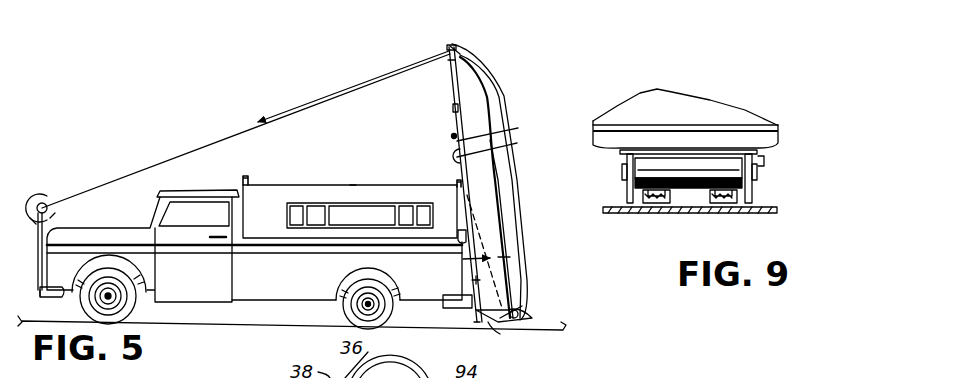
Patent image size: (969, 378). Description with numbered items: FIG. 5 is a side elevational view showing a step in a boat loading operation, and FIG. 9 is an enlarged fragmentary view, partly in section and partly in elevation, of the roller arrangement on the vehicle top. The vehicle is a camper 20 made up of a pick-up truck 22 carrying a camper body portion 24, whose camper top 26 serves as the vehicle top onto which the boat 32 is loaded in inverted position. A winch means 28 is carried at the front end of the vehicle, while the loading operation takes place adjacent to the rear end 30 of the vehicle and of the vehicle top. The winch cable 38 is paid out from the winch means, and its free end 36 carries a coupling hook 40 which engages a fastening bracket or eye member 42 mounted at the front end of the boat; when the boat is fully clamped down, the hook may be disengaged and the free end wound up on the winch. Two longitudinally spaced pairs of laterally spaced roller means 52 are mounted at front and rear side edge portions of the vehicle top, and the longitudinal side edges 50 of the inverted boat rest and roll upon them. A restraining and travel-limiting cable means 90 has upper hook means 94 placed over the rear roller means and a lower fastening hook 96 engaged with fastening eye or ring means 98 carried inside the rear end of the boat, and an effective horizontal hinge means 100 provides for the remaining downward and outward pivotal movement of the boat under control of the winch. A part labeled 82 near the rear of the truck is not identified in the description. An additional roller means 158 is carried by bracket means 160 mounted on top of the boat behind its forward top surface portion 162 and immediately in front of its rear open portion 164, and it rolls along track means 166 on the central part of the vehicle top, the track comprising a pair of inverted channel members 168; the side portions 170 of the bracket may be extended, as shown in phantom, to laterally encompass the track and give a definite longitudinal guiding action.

In FIG. 5, the camper 20 is at (185, 182).
In FIG. 5, the pick-up truck 22 is at (256, 232).
In FIG. 5, the camper body portion 24 is at (272, 206).
In FIG. 5, the camper top 26 is at (349, 184).
In FIG. 5, the winch means 28 is at (50, 196).
In FIG. 5, the rear end 30 is at (468, 281).
In FIG. 5, the boat 32 is at (511, 110).
In FIG. 9, the boat 32 is at (683, 87).
In FIG. 5, the free end of winch cable 36 is at (428, 64).
In FIG. 5, the winch cable 38 is at (410, 72).
In FIG. 5, the coupling hook 40 is at (447, 72).
In FIG. 5, the fastening bracket or eye member 42 is at (453, 44).
In FIG. 5, the longitudinal side edges 50 is at (485, 137).
In FIG. 5, the roller means 52 is at (247, 178).
In FIG. 5, the hitch 82 is at (444, 308).
In FIG. 5, the restraining and travel-limiting cable means 90 is at (512, 257).
In FIG. 5, the upper hook means 94 is at (480, 152).
In FIG. 5, the lower fastening hook 96 is at (520, 310).
In FIG. 5, the fastening eye or ring means 98 is at (494, 338).
In FIG. 5, the effective horizontal hinge means 100 is at (462, 0).
In FIG. 5, the additional roller means 158 is at (449, 135).
In FIG. 9, the additional roller means 158 is at (704, 169).
In FIG. 9, the bracket means 160 is at (766, 160).
In FIG. 5, the forward top surface portion 162 is at (449, 107).
In FIG. 5, the rear open portion 164 is at (475, 234).
In FIG. 9, the track means 166 is at (741, 217).
In FIG. 5, the inverted channel members 168 is at (383, 152).
In FIG. 9, the inverted channel members 168 is at (638, 203).
In FIG. 9, the side portions 170 is at (627, 158).